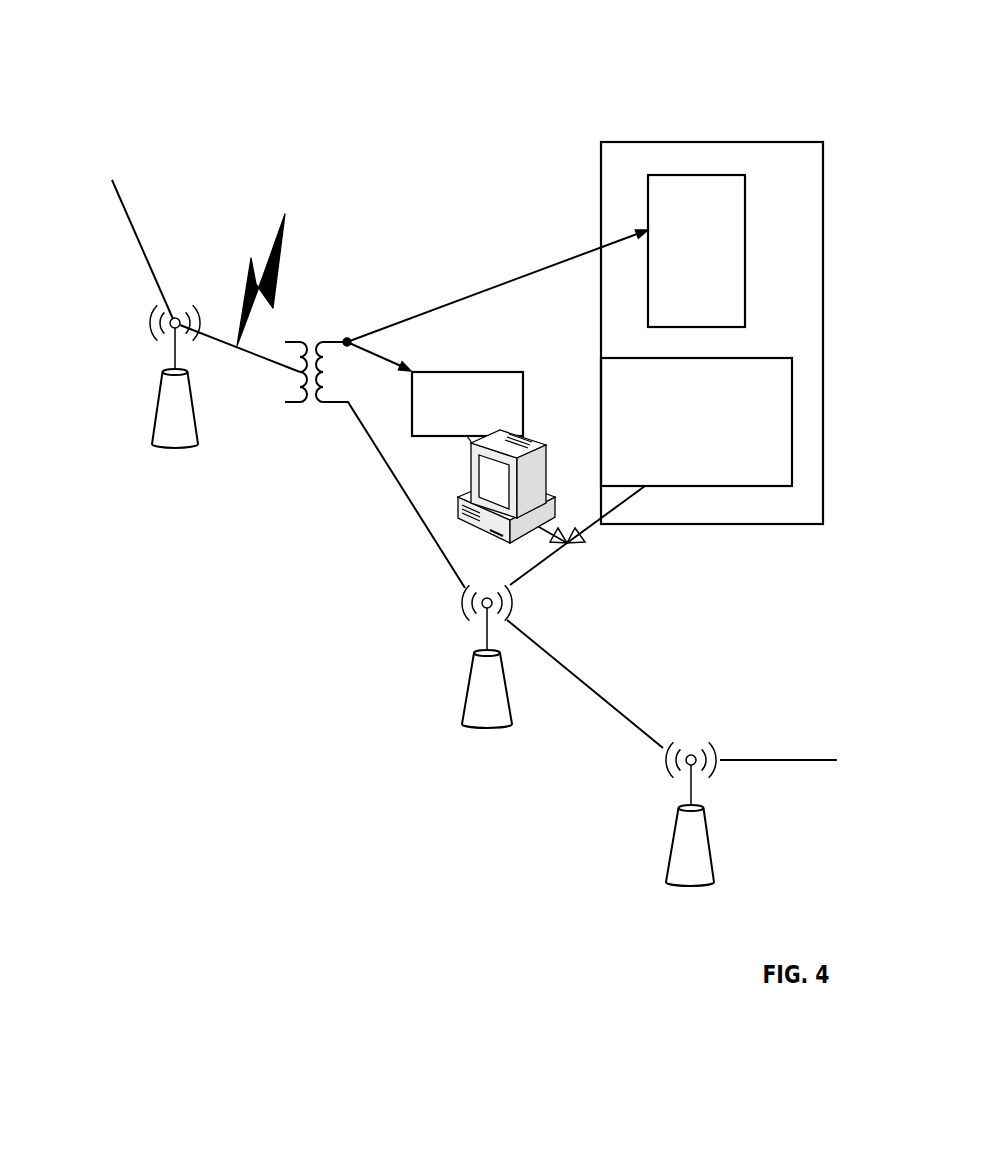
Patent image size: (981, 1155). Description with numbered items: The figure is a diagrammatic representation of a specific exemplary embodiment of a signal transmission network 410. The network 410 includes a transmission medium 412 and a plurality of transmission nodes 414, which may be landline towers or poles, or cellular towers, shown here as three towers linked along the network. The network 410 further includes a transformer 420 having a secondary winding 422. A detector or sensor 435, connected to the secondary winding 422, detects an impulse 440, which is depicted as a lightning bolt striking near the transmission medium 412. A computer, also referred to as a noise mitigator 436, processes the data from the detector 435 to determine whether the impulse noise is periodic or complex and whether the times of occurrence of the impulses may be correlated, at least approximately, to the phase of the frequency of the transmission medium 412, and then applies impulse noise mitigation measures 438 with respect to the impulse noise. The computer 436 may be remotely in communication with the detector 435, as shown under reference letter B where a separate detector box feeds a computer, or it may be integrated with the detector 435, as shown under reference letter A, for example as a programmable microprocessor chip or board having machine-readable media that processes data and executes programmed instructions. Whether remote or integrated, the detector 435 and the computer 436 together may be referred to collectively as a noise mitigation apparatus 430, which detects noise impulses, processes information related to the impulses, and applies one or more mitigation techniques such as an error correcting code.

The network 410 is at (374, 38).
The transmission medium 412 is at (133, 228).
The transmission nodes 414 is at (168, 402).
The transformer 420 is at (292, 342).
The secondary winding 422 is at (334, 405).
The noise mitigation apparatus 430 is at (745, 142).
The detector 435 is at (745, 282).
The computer 436 is at (522, 450).
The impulse noise mitigation measures 438 is at (573, 550).
The impulse 440 is at (272, 248).